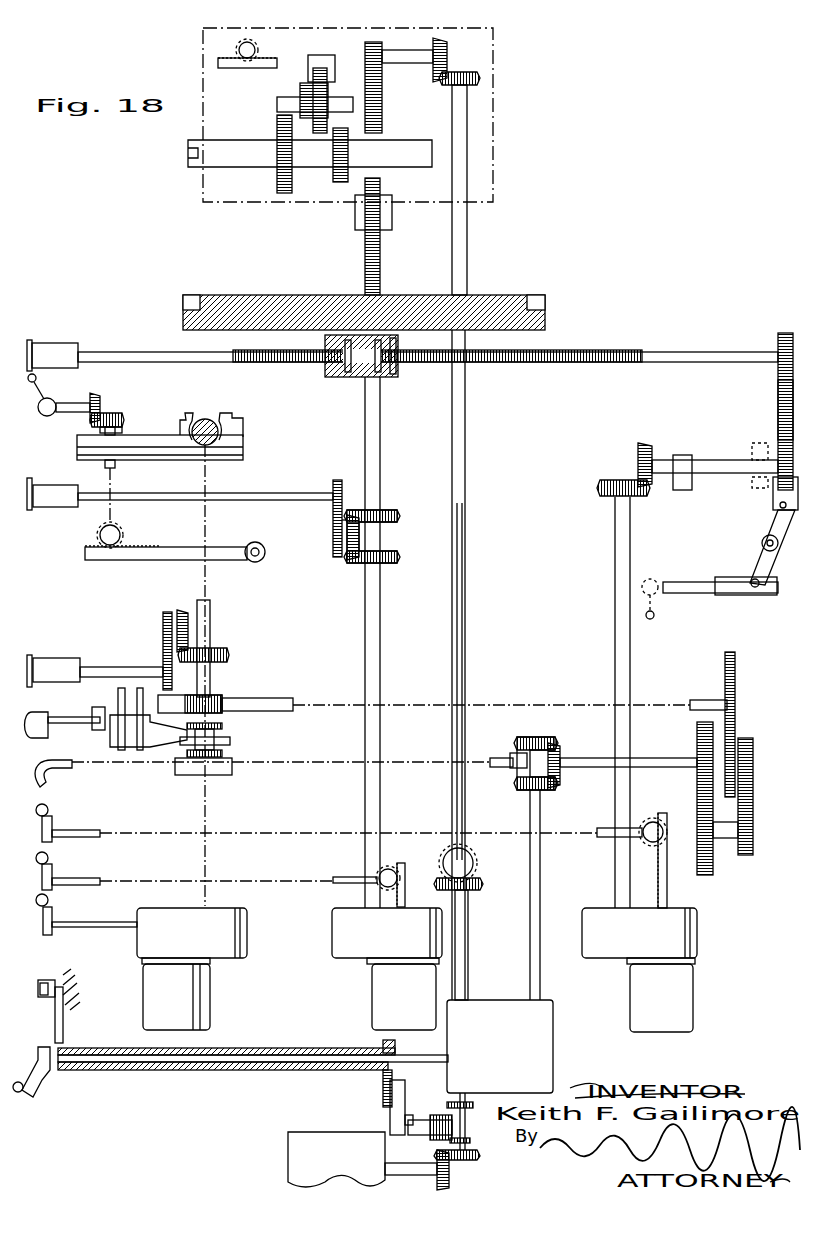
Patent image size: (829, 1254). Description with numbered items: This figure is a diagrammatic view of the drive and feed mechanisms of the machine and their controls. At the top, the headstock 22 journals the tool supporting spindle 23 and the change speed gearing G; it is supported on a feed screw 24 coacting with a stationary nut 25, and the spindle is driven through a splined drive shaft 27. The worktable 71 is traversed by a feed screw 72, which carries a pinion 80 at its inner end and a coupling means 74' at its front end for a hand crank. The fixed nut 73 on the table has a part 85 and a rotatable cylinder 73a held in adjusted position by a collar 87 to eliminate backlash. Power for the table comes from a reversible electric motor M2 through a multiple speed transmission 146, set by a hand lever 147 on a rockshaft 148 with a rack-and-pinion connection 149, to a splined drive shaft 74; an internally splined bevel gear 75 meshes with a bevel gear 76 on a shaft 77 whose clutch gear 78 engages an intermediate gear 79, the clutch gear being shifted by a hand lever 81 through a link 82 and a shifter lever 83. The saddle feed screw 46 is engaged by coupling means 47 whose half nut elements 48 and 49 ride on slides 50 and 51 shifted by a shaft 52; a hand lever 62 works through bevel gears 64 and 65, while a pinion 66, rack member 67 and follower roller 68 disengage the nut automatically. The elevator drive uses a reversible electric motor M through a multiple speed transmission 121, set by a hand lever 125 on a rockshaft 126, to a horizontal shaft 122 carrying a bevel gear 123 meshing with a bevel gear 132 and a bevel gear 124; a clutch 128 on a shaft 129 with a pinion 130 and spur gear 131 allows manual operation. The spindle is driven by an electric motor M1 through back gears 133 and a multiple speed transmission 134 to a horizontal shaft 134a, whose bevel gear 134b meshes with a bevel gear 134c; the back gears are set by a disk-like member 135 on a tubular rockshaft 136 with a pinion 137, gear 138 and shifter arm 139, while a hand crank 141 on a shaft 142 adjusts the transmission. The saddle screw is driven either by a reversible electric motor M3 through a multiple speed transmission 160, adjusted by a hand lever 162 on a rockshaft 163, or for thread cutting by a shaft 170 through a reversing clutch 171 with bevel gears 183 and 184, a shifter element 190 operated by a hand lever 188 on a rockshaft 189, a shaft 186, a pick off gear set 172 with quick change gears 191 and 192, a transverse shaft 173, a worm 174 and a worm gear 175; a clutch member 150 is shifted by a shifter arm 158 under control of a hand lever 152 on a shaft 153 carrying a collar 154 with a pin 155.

The headstock 22 is at (499, 118).
The change speed gearing G is at (369, 38).
The tool supporting spindle 23 is at (188, 153).
The feed screw 24 is at (365, 258).
The stationary nut 25 is at (355, 220).
The worktable 71 is at (497, 295).
The splined drive shaft 27 is at (465, 475).
The coupling means 74' is at (52, 339).
The feed screw 72 is at (578, 362).
The collar 87 is at (330, 377).
The cylinder 73a is at (360, 377).
The nut part 85 is at (385, 377).
The fixed nut 73 is at (399, 383).
The pinion 80 is at (785, 333).
The intermediate gear 79 is at (778, 400).
The hand lever 62 is at (40, 384).
The bevel gear 64 is at (100, 402).
The bevel gear 65 is at (115, 416).
The shaft 52 is at (100, 430).
The slide 50 is at (77, 441).
The slide 51 is at (82, 455).
The feed screw 46 is at (206, 418).
The half nut element 48 is at (184, 414).
The half nut element 49 is at (236, 428).
The coupling means 47 is at (239, 405).
The clutch 128 is at (44, 507).
The shaft 129 is at (298, 493).
The pinion 130 is at (338, 480).
The spur gear 131 is at (333, 530).
The bevel gear 124 is at (397, 515).
The bevel gear 132 is at (370, 535).
The bevel gear 123 is at (397, 558).
The horizontal shaft 122 is at (380, 598).
The pinion 66 is at (122, 531).
The rack member 67 is at (126, 560).
The follower roller 68 is at (255, 562).
The hand lever 152 is at (125, 669).
The shaft 153 is at (72, 717).
The collar 154 is at (98, 730).
The pin 155 is at (115, 742).
The worm 174 is at (222, 700).
The worm gear 175 is at (262, 698).
The clutch member 150 is at (230, 740).
The shifter arm 158 is at (175, 766).
The hand lever 188 is at (58, 782).
The hand lever 147 is at (52, 820).
The hand lever 125 is at (52, 866).
The rockshaft 126 is at (348, 878).
The hand lever 162 is at (52, 908).
The rockshaft 163 is at (115, 928).
The multiple speed transmission 160 is at (251, 959).
The reversible electric motor M3 is at (210, 998).
The multiple speed transmission 121 is at (327, 931).
The reversible electric motor M is at (372, 1000).
The multiple speed transmission 146 is at (703, 943).
The reversible electric motor M2 is at (693, 992).
The splined drive shaft 74 is at (603, 702).
The bevel gear 75 is at (600, 488).
The bevel gear 76 is at (638, 460).
The shaft 77 is at (715, 460).
The clutch gear 78 is at (774, 446).
The shifter lever 83 is at (773, 521).
The link 82 is at (695, 582).
The hand lever 81 is at (658, 608).
The rockshaft 189 is at (497, 767).
The bevel gear 184 is at (525, 737).
The shifter element 190 is at (520, 760).
The bevel gear 183 is at (525, 785).
The reversing clutch 171 is at (562, 745).
The shaft 186 is at (668, 758).
The shaft 170 is at (540, 800).
The pick off gear set 172 is at (724, 664).
The transverse shaft 173 is at (708, 700).
The quick change gear 191 is at (753, 822).
The quick change gear 192 is at (753, 847).
The rockshaft 148 is at (600, 838).
The rack-and-pinion connection 149 is at (661, 815).
The bevel gear 134c is at (477, 860).
The bevel gear 134b is at (480, 882).
The horizontal shaft 134a is at (468, 930).
The multiple speed transmission 134 is at (504, 994).
The disk-like member 135 is at (63, 1012).
The shaft 142 is at (203, 1062).
The tubular rockshaft 136 is at (255, 1070).
The hand crank 141 is at (45, 1085).
The pinion 137 is at (383, 1045).
The gear 138 is at (383, 1092).
The shifter arm 139 is at (390, 1122).
The electric motor M1 is at (292, 1140).
The back gears 133 is at (476, 1127).